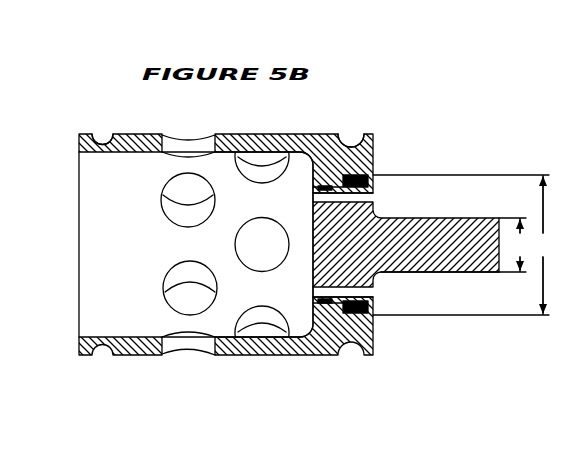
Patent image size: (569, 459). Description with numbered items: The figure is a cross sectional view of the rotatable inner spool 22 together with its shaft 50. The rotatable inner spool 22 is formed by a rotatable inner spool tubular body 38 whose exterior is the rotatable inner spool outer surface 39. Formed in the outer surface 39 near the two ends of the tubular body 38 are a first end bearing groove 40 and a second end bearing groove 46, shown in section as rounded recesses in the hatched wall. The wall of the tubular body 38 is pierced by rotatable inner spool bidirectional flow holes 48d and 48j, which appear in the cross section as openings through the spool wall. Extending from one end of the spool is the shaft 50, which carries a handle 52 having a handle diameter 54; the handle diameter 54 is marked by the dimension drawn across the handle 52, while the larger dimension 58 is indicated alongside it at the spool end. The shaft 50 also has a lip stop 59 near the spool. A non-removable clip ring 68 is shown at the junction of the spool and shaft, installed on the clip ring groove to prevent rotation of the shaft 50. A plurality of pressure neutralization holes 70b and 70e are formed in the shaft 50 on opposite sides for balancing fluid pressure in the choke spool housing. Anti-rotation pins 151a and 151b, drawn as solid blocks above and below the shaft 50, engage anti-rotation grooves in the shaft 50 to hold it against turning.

The rotatable inner spool 22 is at (122, 108).
The first end bearing groove 40 is at (105, 143).
The rotatable inner spool bidirectional flow hole 48d is at (172, 137).
The rotatable inner spool outer surface 39 is at (260, 133).
The second end bearing groove 46 is at (350, 140).
The anti-rotation pin 151b is at (357, 177).
The lip stop 59 is at (369, 171).
The pressure neutralization hole 70e is at (373, 200).
The shaft 50 is at (487, 206).
The handle 52 is at (448, 273).
The handle diameter 54 is at (516, 245).
The bore diameter 58 is at (463, 245).
The pressure neutralization hole 70b is at (373, 290).
The anti-rotation pin 151a is at (366, 312).
The non-removable clip ring 68 is at (328, 303).
The rotatable inner spool tubular body 38 is at (235, 356).
The rotatable inner spool bidirectional flow hole 48j is at (170, 350).